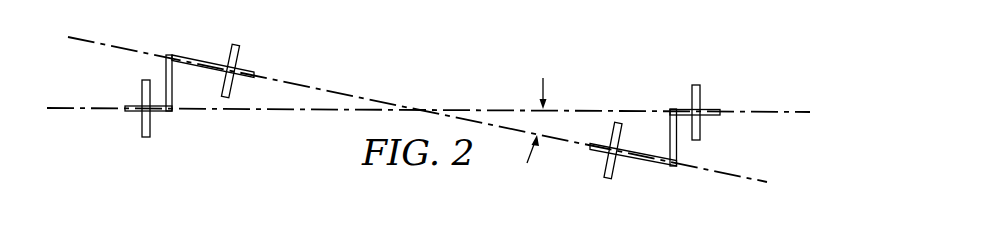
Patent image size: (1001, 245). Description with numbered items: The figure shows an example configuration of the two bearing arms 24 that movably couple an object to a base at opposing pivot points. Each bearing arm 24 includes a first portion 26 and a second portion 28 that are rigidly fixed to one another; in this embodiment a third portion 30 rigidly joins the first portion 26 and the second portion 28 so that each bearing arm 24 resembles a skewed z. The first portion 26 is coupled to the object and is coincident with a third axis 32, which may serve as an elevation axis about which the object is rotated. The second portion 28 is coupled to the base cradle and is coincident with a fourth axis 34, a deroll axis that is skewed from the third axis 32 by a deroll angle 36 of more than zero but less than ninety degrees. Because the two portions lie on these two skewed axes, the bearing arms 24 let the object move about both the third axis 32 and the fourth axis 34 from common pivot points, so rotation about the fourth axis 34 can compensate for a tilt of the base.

The bearing arm 24 is at (420, 112).
The first portion 26 is at (424, 112).
The second portion 28 is at (422, 112).
The third portion 30 is at (421, 112).
The third axis 32 is at (417, 137).
The fourth axis 34 is at (432, 86).
The deroll angle 36 is at (561, 111).